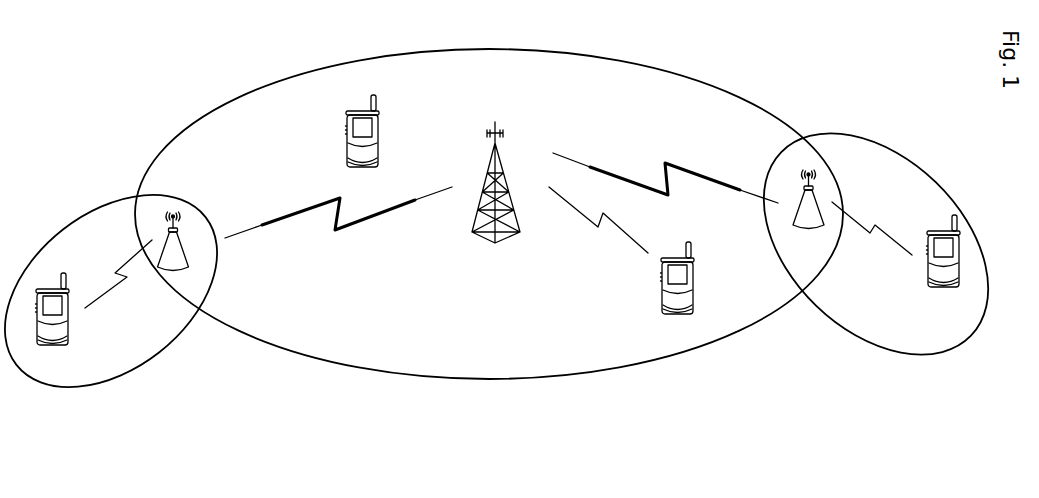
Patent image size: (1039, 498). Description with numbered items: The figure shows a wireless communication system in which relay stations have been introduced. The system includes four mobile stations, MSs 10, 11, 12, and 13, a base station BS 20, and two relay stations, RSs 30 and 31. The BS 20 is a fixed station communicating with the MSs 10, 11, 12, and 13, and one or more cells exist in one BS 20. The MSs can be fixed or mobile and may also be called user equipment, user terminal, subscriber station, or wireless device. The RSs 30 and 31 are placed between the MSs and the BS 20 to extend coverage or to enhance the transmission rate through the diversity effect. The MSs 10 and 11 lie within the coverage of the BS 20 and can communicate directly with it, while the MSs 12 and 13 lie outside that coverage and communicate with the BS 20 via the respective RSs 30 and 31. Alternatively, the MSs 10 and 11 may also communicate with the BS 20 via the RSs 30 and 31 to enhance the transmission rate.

The MS 10 is at (347, 141).
The MS 11 is at (694, 277).
The MS 12 is at (68, 322).
The MS 13 is at (928, 267).
The BS 20 is at (501, 157).
The RS 30 is at (182, 231).
The RS 31 is at (812, 190).